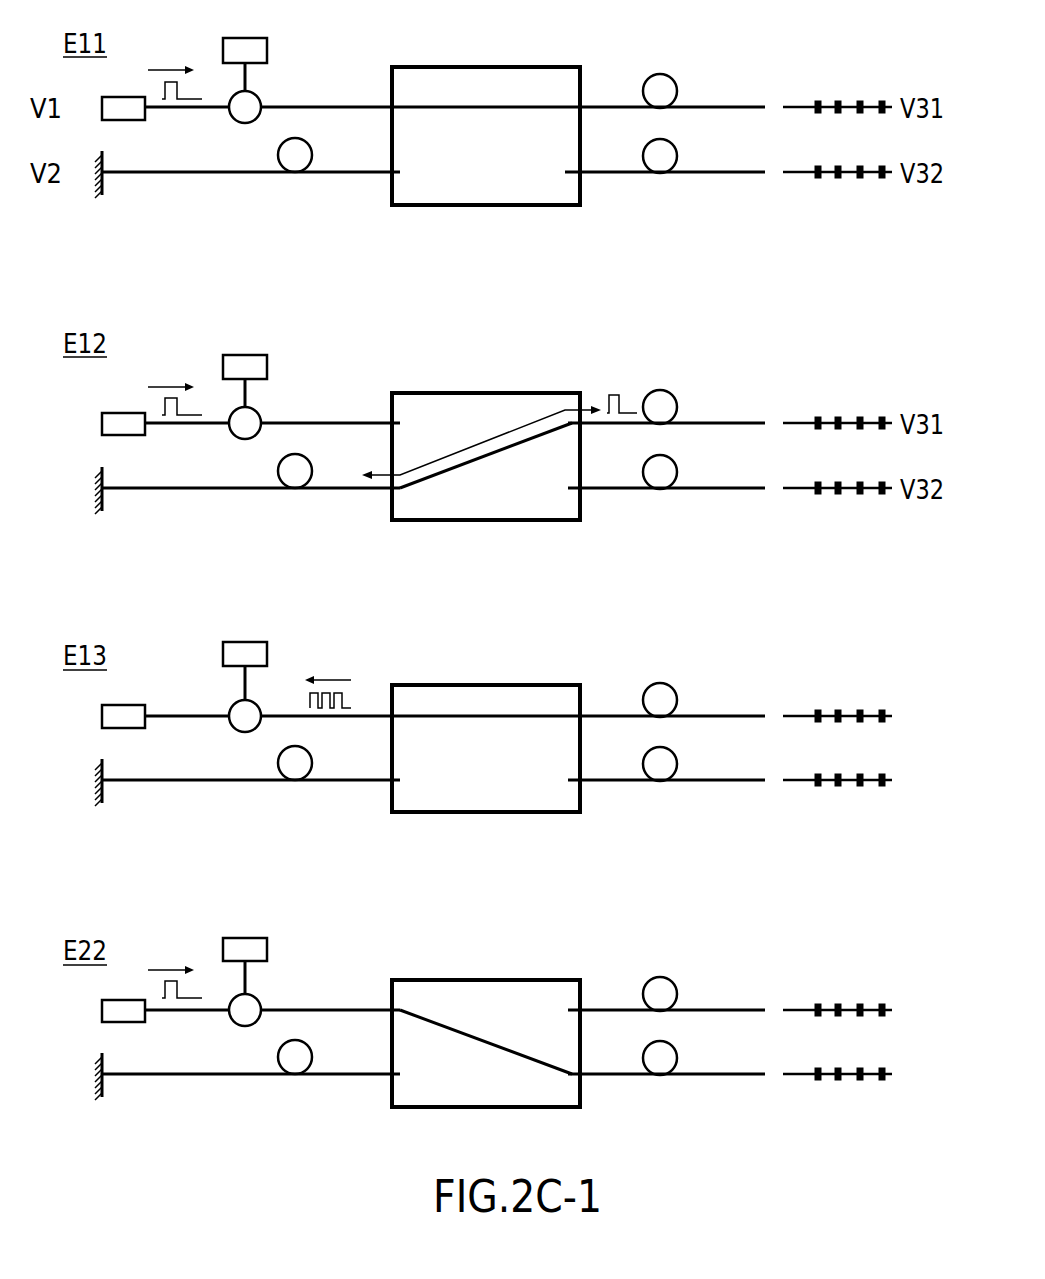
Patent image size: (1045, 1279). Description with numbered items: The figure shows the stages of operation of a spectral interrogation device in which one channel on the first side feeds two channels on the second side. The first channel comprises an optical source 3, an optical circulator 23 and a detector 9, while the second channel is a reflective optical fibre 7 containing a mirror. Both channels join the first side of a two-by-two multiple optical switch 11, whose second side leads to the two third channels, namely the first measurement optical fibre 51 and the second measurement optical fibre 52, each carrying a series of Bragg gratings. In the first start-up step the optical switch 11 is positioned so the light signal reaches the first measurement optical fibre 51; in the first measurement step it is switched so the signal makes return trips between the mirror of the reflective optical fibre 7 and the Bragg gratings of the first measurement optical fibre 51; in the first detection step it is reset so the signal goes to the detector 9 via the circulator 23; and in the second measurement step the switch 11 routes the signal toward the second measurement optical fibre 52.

The optical source 3 is at (146, 115).
The reflective optical fibre 7 is at (165, 174).
The detector 9 is at (267, 52).
The multiple optical switch 11 is at (580, 185).
The optical circulator 23 is at (259, 98).
The first measurement optical fibre 51 is at (735, 106).
The second measurement optical fibre 52 is at (722, 173).